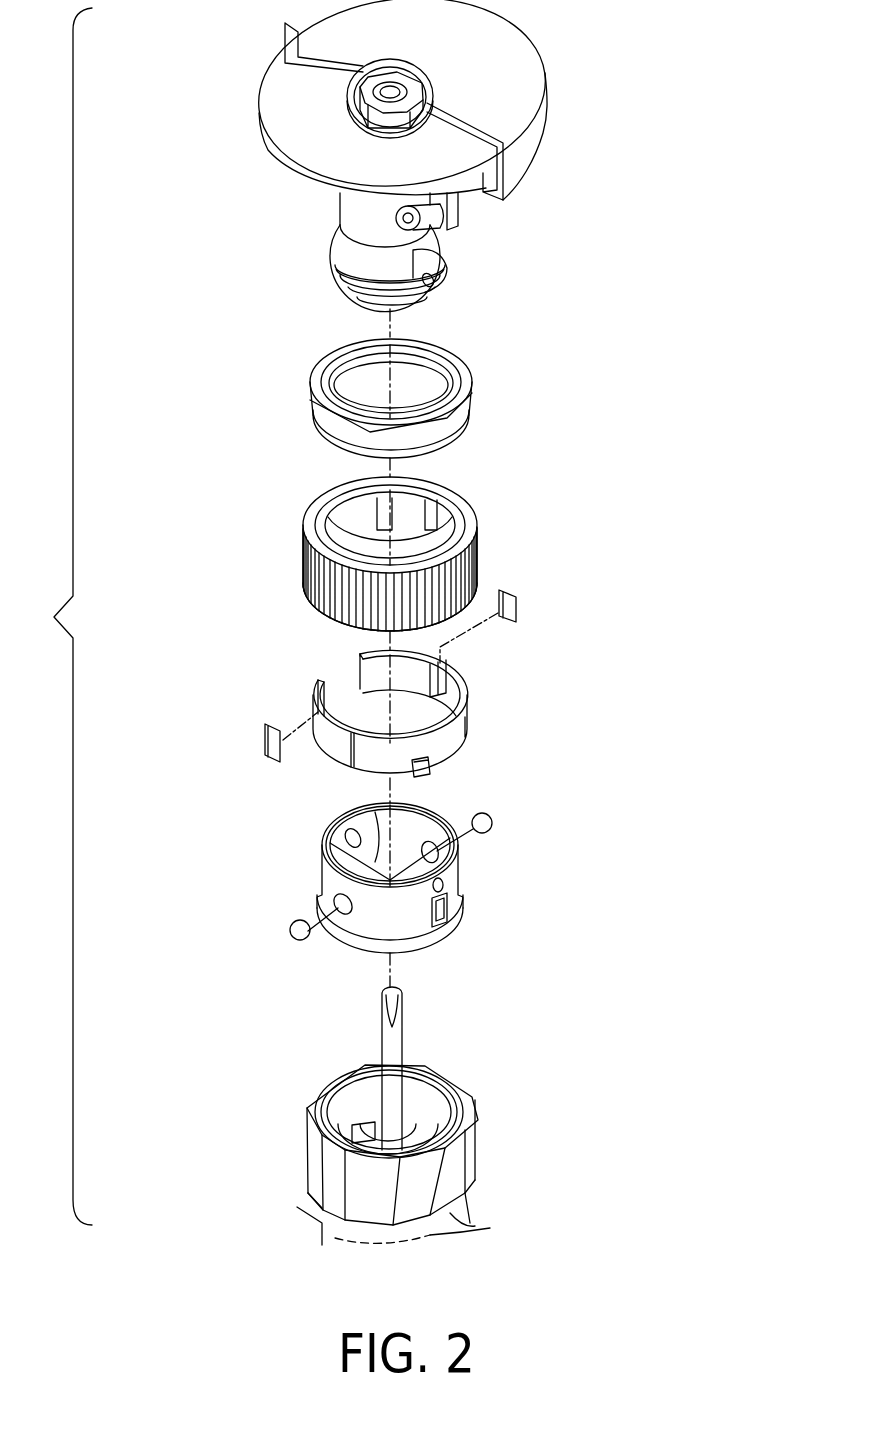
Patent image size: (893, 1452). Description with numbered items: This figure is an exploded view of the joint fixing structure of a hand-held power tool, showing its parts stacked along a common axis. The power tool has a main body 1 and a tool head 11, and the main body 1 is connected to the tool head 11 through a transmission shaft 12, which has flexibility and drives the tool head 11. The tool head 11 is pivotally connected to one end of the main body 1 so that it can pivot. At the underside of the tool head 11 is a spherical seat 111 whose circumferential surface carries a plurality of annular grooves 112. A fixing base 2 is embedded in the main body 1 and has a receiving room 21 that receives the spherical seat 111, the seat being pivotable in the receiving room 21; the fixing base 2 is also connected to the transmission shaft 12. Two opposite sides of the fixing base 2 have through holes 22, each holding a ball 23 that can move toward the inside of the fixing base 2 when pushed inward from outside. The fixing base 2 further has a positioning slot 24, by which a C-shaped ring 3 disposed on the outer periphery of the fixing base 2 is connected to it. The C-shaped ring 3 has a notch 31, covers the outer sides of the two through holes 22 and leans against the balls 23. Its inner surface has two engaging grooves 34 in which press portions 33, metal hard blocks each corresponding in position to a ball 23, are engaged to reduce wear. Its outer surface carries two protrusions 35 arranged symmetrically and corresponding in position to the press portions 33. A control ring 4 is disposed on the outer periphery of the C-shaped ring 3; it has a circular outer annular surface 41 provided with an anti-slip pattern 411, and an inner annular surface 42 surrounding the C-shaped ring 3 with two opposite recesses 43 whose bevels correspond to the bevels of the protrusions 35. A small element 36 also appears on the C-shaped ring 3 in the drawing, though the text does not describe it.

The main body 1 is at (272, 1142).
The tool head 11 is at (240, 80).
The spherical seat 111 is at (342, 232).
The annular grooves 112 is at (350, 290).
The transmission shaft 12 is at (403, 1042).
The fixing base 2 is at (339, 878).
The receiving room 21 is at (386, 873).
The through holes 22 is at (432, 846).
The ball 23 is at (492, 823).
The positioning slot 24 is at (440, 928).
The C-shaped ring 3 is at (344, 680).
The notch 31 is at (344, 693).
The press portions 33 is at (508, 597).
The engaging grooves 34 is at (445, 690).
The protrusions 35 is at (333, 757).
The tab 36 is at (428, 774).
The control ring 4 is at (320, 562).
The outer annular surface 41 is at (318, 596).
The anti-slip pattern 411 is at (347, 622).
The inner annular surface 42 is at (340, 523).
The recesses 43 is at (450, 530).